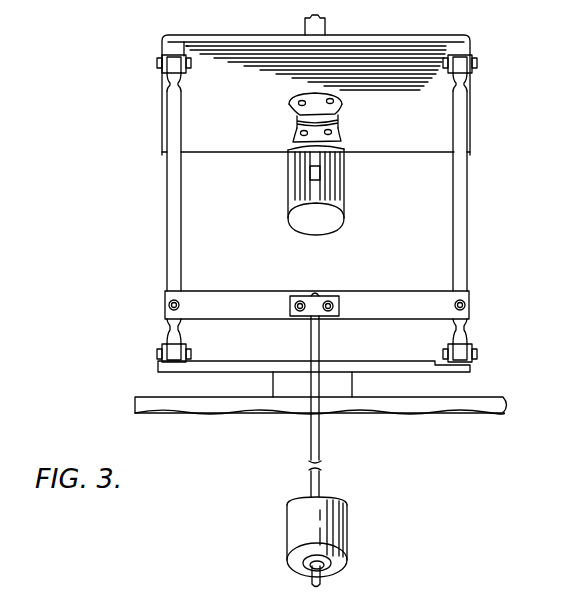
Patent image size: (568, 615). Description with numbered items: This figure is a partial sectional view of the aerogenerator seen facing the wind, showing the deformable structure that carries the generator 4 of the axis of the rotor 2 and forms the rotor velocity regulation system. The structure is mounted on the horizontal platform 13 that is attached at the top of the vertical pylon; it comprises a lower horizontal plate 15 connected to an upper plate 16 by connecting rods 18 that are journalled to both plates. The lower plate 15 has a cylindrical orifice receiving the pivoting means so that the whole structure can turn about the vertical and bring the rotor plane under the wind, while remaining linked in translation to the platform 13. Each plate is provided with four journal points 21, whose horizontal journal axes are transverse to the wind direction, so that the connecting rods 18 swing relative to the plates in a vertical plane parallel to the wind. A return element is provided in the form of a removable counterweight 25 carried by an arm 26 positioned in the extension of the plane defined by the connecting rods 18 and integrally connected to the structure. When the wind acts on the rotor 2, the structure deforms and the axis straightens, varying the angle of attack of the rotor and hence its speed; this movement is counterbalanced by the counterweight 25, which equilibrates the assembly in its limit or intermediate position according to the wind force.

The rotor 2 is at (305, 24).
The upper plate 16 is at (406, 58).
The journal points 21 is at (158, 63).
The connecting rod 18 is at (167, 213).
The generator 4 is at (288, 171).
The platform 13 is at (140, 400).
The lower horizontal plate 15 is at (398, 368).
The arm 26 is at (311, 440).
The counterweight 25 is at (342, 520).